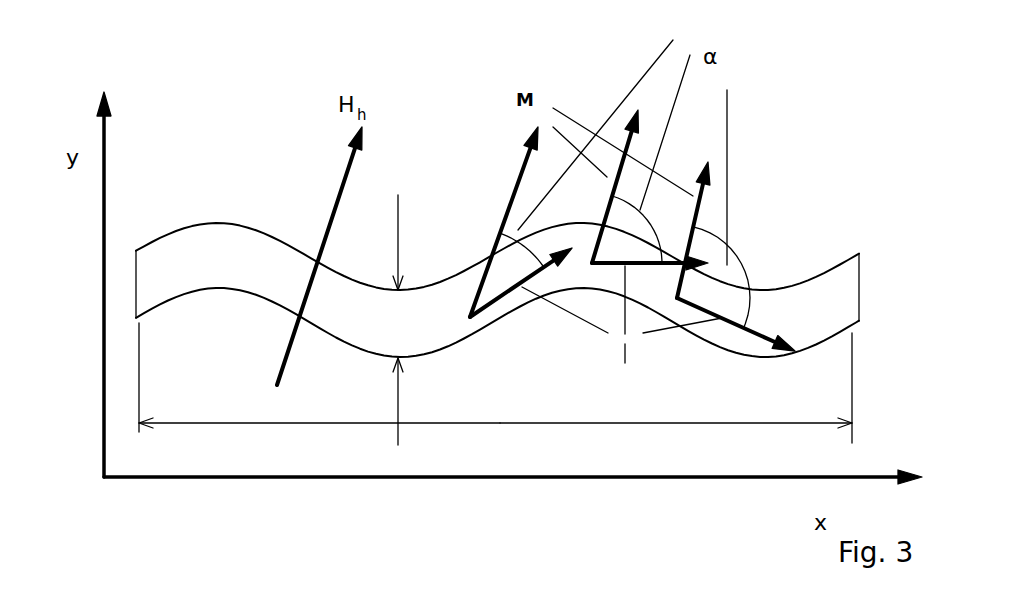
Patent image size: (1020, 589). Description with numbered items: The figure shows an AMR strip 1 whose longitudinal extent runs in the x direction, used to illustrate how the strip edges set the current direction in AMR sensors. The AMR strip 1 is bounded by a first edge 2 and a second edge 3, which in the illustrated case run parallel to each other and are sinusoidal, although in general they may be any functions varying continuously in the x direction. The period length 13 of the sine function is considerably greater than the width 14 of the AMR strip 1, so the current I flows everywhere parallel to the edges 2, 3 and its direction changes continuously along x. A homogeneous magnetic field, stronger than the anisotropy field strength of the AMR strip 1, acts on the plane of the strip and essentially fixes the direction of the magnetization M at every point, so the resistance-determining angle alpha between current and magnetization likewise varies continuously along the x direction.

The AMR strip 1 is at (497, 205).
The first edge 2 is at (222, 230).
The second edge 3 is at (259, 298).
The period length 13 is at (495, 383).
The width 14 is at (408, 302).